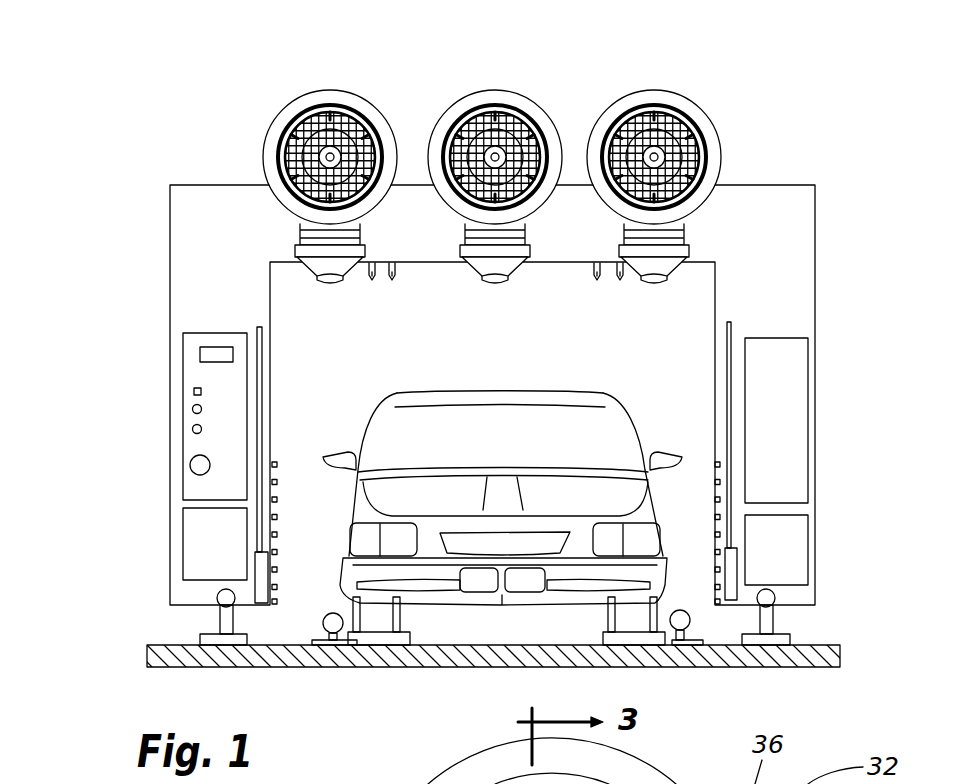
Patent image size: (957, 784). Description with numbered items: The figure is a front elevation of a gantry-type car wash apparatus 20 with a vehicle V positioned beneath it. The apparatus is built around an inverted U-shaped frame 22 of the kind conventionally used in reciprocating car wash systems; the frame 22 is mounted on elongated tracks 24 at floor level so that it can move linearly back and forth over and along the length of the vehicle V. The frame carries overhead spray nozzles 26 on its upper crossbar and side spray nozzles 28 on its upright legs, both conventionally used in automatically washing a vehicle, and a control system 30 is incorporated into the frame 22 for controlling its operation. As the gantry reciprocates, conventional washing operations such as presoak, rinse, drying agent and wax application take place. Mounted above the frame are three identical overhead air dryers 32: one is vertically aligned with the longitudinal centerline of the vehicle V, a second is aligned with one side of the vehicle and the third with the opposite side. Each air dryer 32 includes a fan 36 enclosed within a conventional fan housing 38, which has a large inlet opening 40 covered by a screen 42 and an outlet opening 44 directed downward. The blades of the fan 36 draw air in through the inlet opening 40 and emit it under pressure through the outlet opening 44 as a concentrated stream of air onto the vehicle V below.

The car wash apparatus 20 is at (498, 307).
The inverted U-shaped frame 22 is at (780, 298).
The elongated tracks 24 is at (233, 620).
The overhead spray nozzles 26 is at (593, 264).
The side spray nozzles 28 is at (278, 530).
The control system 30 is at (240, 487).
The overhead air dryers 32 is at (577, 147).
The fan 36 is at (739, 147).
The fan housing 38 is at (680, 103).
The inlet opening 40 is at (705, 135).
The screen 42 is at (703, 162).
The outlet opening 44 is at (690, 220).
The vehicle V is at (498, 390).